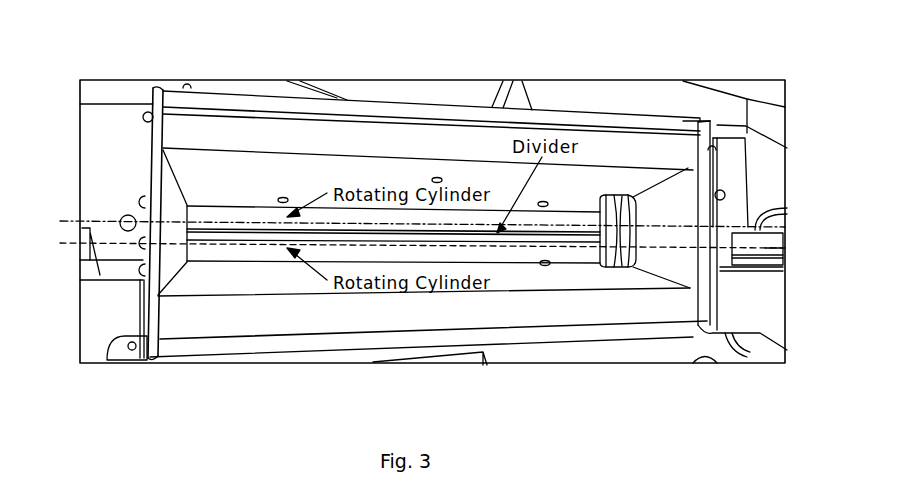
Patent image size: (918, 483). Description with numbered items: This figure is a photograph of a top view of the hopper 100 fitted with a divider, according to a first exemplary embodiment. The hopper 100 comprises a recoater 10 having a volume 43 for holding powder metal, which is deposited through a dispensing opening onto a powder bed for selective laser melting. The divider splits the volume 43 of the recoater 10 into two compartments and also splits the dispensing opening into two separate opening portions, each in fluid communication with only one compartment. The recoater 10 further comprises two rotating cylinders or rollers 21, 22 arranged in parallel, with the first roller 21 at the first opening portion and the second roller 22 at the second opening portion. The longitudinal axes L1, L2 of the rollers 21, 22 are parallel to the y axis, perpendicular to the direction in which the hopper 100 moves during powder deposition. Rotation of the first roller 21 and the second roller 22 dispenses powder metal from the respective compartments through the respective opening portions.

The hopper 100 is at (749, 64).
The recoater 10 is at (252, 98).
The first roller 21 is at (563, 217).
The second roller 22 is at (512, 250).
The volume 43 is at (287, 263).
The longitudinal axis of first roller L1 is at (72, 218).
The longitudinal axis of second roller L2 is at (68, 245).